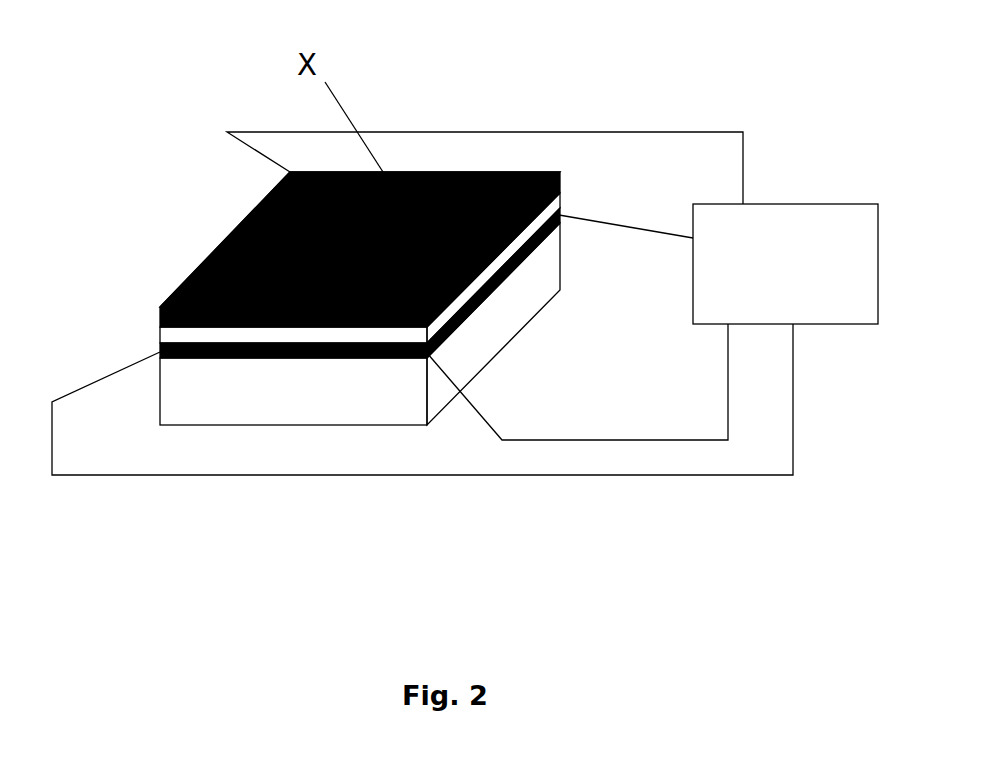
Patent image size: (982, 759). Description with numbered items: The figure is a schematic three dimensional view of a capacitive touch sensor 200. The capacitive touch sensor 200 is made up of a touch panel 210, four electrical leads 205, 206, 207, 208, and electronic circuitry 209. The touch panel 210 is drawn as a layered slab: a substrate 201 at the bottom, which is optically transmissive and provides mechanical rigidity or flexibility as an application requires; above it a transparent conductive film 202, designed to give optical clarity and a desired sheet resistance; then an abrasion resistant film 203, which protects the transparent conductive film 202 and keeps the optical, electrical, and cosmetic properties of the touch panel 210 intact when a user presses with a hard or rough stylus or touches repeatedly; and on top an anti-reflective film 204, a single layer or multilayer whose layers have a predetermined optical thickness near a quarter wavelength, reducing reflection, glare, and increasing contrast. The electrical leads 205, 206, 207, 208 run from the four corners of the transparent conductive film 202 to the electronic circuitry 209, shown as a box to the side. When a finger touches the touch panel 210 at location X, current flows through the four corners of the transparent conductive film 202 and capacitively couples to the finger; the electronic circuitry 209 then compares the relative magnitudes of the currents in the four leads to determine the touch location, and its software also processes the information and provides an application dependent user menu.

The capacitive touch sensor 200 is at (662, 88).
The substrate 201 is at (521, 320).
The transparent conductive film 202 is at (261, 369).
The abrasion resistant film 203 is at (148, 324).
The anti-reflective film 204 is at (159, 281).
The electrical lead 205 is at (446, 115).
The electrical lead 206 is at (633, 201).
The electrical lead 207 is at (610, 427).
The electrical lead 208 is at (176, 486).
The electronic circuitry 209 is at (785, 264).
The touch panel 210 is at (208, 214).